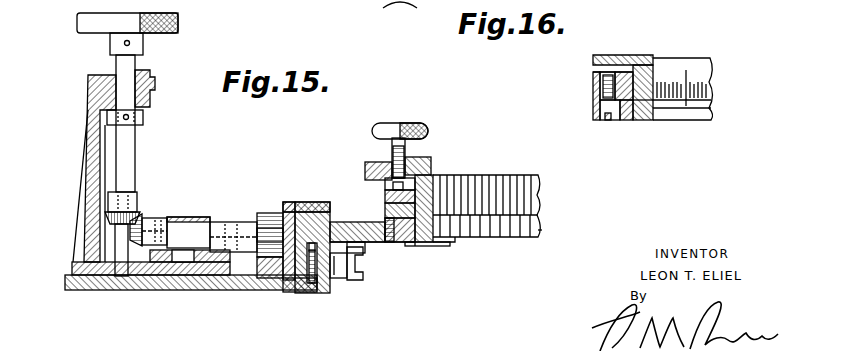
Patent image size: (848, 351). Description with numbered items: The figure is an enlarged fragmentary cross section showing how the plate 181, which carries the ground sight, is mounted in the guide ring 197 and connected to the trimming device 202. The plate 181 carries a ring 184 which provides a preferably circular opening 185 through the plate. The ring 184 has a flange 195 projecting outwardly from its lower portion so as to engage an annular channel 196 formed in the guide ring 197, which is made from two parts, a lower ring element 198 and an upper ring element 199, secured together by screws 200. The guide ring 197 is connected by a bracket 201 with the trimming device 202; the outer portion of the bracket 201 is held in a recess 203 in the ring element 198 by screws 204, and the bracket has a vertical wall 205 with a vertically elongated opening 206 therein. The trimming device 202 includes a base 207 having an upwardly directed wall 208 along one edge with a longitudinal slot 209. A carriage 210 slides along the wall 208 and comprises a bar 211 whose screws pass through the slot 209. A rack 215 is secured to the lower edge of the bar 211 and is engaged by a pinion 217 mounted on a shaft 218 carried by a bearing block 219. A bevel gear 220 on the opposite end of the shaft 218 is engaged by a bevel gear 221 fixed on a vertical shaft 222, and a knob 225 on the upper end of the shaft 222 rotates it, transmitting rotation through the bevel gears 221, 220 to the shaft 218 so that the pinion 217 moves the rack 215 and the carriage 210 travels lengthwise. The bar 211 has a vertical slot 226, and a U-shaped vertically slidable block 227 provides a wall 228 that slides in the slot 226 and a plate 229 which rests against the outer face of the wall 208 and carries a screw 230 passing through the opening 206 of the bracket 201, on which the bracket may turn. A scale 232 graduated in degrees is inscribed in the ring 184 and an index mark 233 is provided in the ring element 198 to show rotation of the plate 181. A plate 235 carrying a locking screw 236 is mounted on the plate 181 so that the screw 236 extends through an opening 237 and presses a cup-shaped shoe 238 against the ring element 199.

In FIG. 15, the plate 181 is at (369, 169).
In FIG. 16, the plate 181 is at (618, 55).
In FIG. 15, the ring 184 is at (433, 187).
In FIG. 16, the ring 184 is at (653, 62).
In FIG. 15, the opening 185 is at (515, 190).
In FIG. 15, the flange 195 is at (431, 243).
In FIG. 16, the flange 195 is at (627, 123).
In FIG. 15, the annular channel 196 is at (385, 208).
In FIG. 16, the annular channel 196 is at (617, 122).
In FIG. 15, the guide ring 197 is at (425, 246).
In FIG. 16, the guide ring 197 is at (641, 112).
In FIG. 15, the lower ring element 198 is at (531, 230).
In FIG. 16, the lower ring element 198 is at (698, 120).
In FIG. 15, the upper ring element 199 is at (385, 192).
In FIG. 16, the upper ring element 199 is at (625, 72).
In FIG. 16, the screws 200 is at (597, 99).
In FIG. 15, the bracket 201 is at (371, 244).
In FIG. 15, the trimming device 202 is at (81, 125).
In FIG. 15, the recess 203 is at (85, 161).
In FIG. 15, the screws 204 is at (394, 245).
In FIG. 15, the vertical wall 205 is at (347, 281).
In FIG. 15, the vertically elongated opening 206 is at (385, 227).
In FIG. 15, the base 207 is at (189, 290).
In FIG. 15, the wall 208 is at (297, 203).
In FIG. 15, the longitudinal slot 209 is at (309, 284).
In FIG. 15, the carriage 210 is at (312, 203).
In FIG. 15, the bar 211 is at (287, 279).
In FIG. 15, the rack 215 is at (270, 268).
In FIG. 15, the pinion 217 is at (257, 209).
In FIG. 15, the shaft 218 is at (188, 235).
In FIG. 15, the bearing block 219 is at (165, 264).
In FIG. 15, the bevel gear 220 is at (152, 218).
In FIG. 15, the bevel gear 221 is at (107, 203).
In FIG. 15, the vertical shaft 222 is at (128, 143).
In FIG. 15, the knob 225 is at (79, 23).
In FIG. 15, the vertical slot 226 is at (280, 218).
In FIG. 15, the block 227 is at (322, 203).
In FIG. 15, the wall 228 is at (299, 284).
In FIG. 15, the plate 229 is at (325, 282).
In FIG. 15, the screw 230 is at (320, 283).
In FIG. 16, the scale 232 is at (690, 86).
In FIG. 16, the index mark 233 is at (695, 102).
In FIG. 15, the plate 235 is at (420, 160).
In FIG. 15, the locking screw 236 is at (428, 119).
In FIG. 15, the opening 237 is at (378, 137).
In FIG. 15, the cup-shaped shoe 238 is at (424, 176).